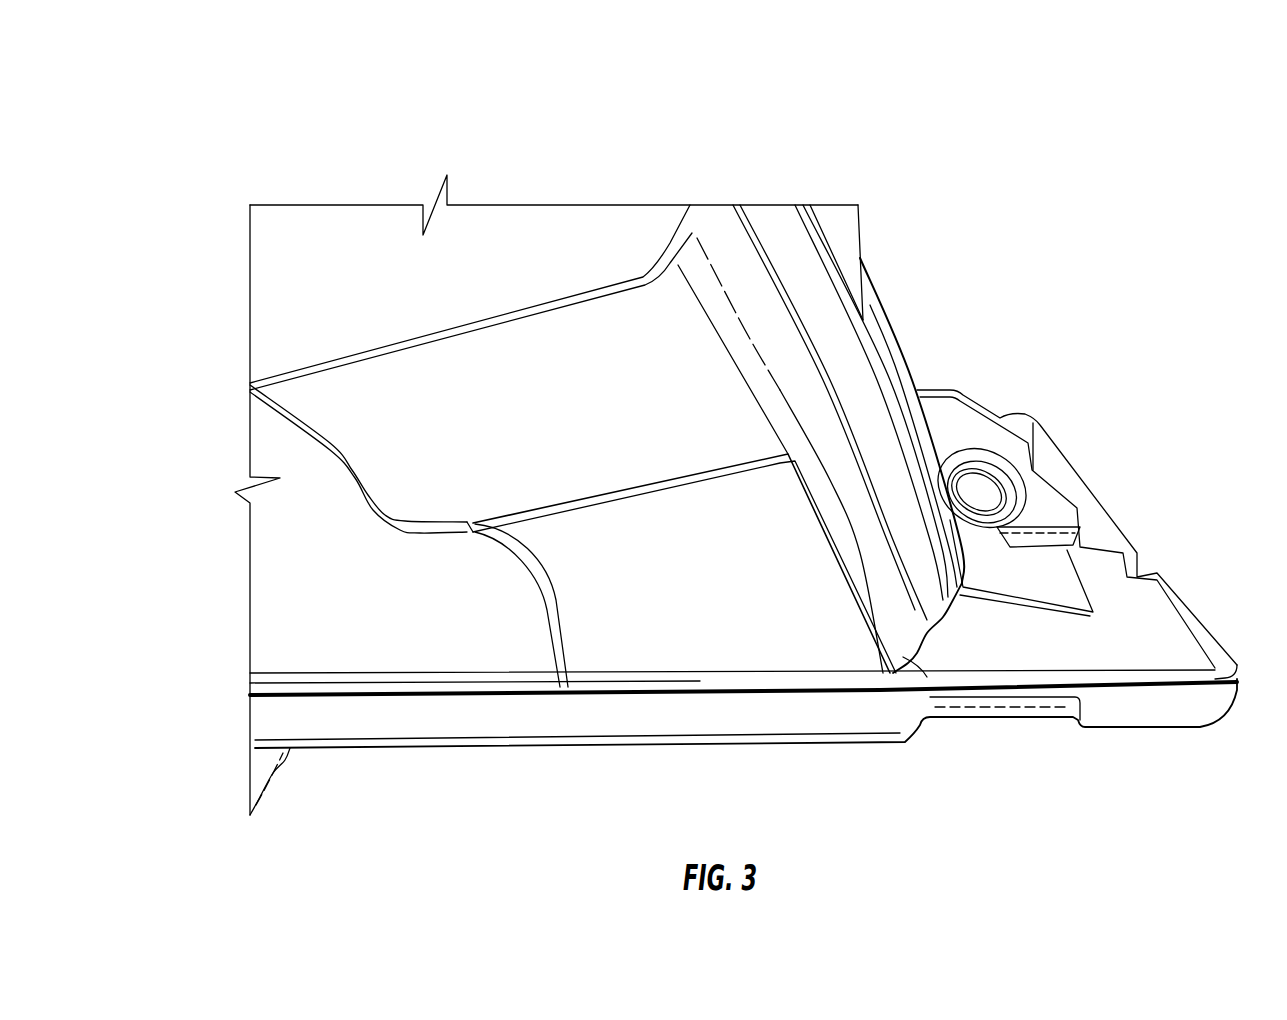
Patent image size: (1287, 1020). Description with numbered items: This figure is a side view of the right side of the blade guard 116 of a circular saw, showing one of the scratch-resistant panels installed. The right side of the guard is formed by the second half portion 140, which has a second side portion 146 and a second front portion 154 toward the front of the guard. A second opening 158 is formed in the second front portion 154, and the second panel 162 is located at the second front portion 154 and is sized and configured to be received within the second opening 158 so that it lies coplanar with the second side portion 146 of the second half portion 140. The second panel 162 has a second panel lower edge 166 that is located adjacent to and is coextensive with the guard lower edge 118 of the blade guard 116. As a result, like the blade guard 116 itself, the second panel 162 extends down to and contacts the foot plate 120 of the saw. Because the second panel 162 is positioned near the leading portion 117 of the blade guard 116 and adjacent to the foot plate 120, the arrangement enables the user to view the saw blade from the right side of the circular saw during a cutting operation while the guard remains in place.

The blade guard 116 is at (788, 189).
The second half portion 140 is at (567, 235).
The second side portion 146 is at (457, 427).
The second opening 158 is at (705, 447).
The second front portion 154 is at (838, 411).
The leading portion 117 is at (915, 570).
The foot plate 120 is at (1110, 650).
The guard lower edge 118 is at (907, 657).
The second panel 162 is at (728, 690).
The second panel lower edge 166 is at (633, 690).